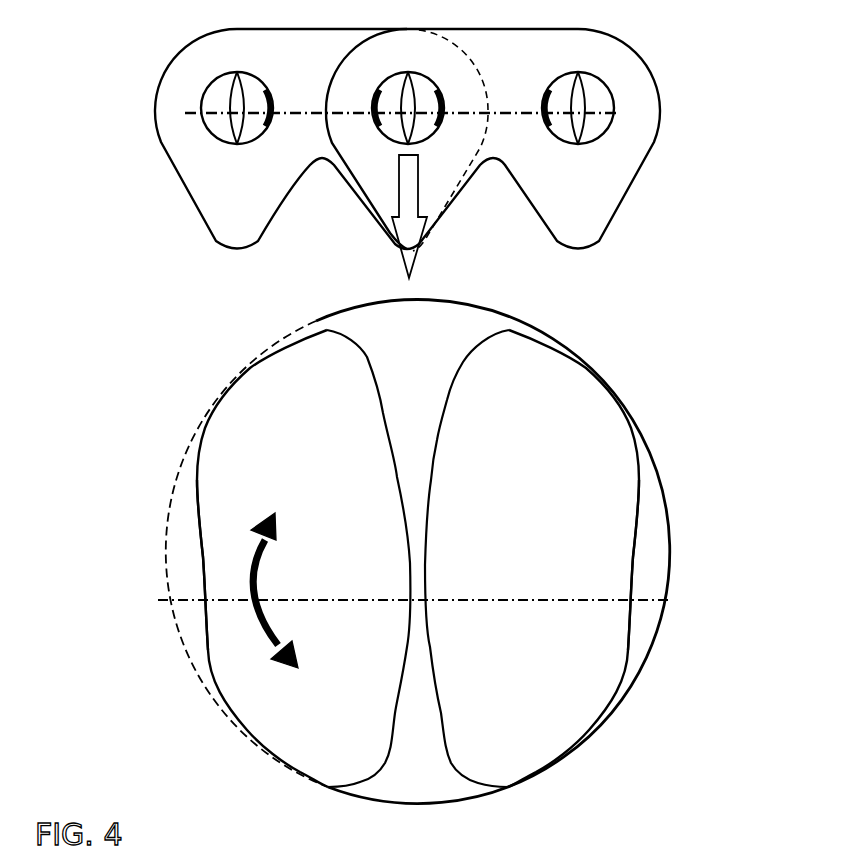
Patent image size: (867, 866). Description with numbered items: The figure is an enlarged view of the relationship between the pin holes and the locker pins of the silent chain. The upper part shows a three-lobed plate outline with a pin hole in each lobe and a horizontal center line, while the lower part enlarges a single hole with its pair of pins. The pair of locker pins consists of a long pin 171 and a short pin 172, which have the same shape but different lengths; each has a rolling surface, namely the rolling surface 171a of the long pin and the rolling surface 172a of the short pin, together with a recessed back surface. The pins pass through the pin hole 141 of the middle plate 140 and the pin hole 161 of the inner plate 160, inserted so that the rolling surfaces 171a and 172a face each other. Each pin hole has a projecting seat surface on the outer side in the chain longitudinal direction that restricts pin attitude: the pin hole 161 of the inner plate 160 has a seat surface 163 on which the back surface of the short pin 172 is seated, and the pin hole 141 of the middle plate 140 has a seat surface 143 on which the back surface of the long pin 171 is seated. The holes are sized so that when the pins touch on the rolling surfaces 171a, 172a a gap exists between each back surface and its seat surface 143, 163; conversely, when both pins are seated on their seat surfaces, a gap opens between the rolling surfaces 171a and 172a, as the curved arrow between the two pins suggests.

The middle plate 140 is at (605, 53).
The pin hole 141 is at (578, 145).
The seat surface 143 is at (222, 558).
The inner plate 160 is at (240, 50).
The pin hole 161 is at (227, 143).
The seat surface 163 is at (607, 562).
The long pin 171 is at (255, 125).
The rolling surface 171a is at (390, 413).
The short pin 172 is at (217, 97).
The rolling surface 172a is at (440, 413).